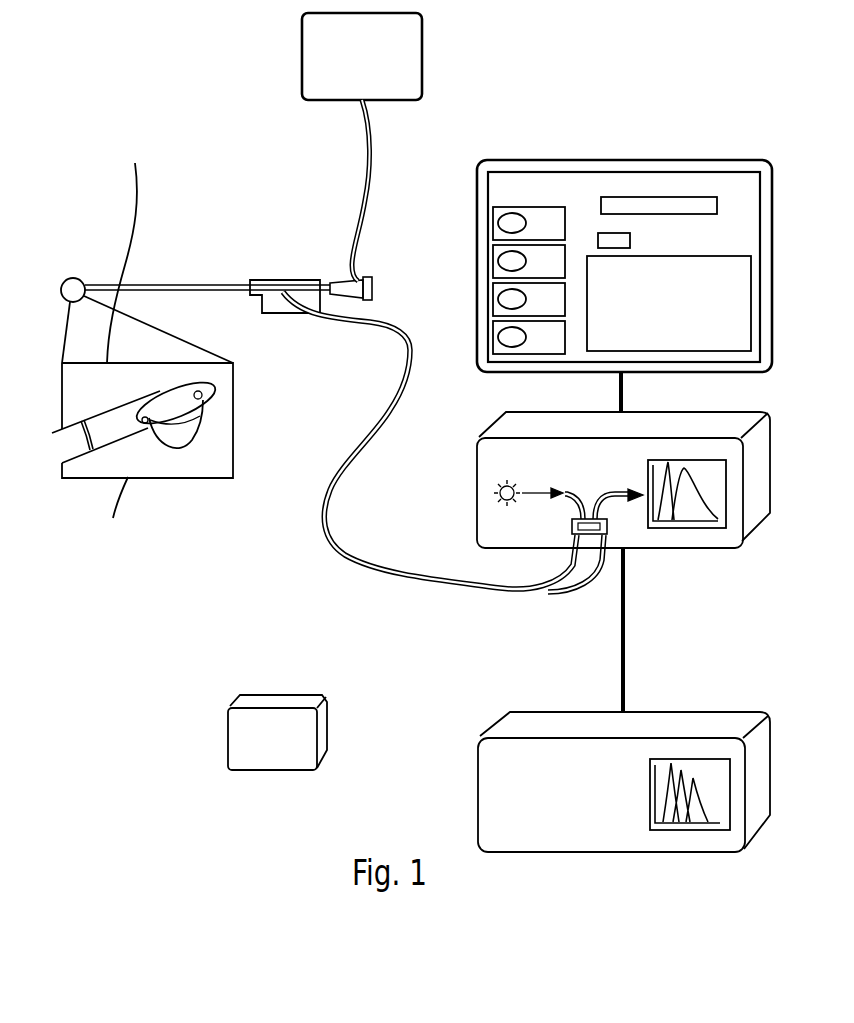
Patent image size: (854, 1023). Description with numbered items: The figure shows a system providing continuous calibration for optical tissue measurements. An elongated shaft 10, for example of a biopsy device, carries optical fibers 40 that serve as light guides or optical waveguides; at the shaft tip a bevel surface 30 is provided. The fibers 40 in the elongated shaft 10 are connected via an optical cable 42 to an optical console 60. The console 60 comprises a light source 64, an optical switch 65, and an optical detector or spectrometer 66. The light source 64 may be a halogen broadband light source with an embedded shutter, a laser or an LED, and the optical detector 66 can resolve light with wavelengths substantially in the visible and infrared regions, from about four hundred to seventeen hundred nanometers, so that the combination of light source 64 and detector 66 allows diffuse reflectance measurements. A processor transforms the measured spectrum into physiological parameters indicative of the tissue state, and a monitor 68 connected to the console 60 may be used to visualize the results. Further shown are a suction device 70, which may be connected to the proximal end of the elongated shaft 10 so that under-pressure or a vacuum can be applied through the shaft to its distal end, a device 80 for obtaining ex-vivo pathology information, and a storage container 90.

The elongated shaft 10 is at (118, 428).
The bevel surface 30 is at (178, 405).
The illumination fiber 40 is at (216, 392).
The optical cable 42 is at (332, 488).
The optical console 60 is at (495, 392).
The light source 64 is at (497, 493).
The optical switch 65 is at (607, 527).
The optical detector 66 is at (692, 532).
The monitor 68 is at (477, 268).
The suction device 70 is at (318, 57).
The device for obtaining ex-vivo pathology information 80 is at (530, 726).
The storage container 90 is at (294, 700).